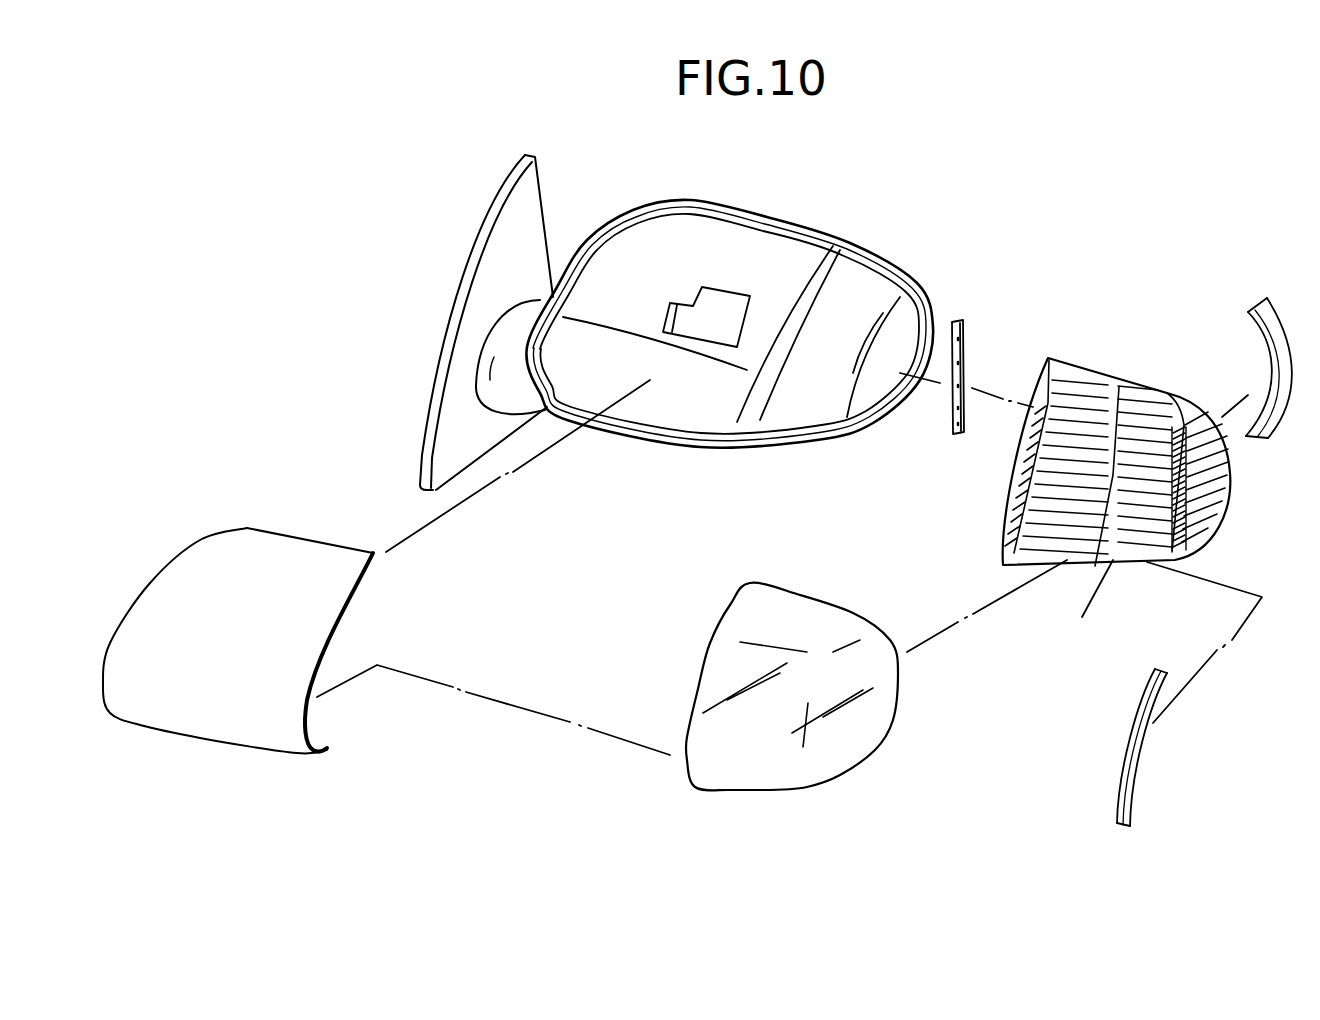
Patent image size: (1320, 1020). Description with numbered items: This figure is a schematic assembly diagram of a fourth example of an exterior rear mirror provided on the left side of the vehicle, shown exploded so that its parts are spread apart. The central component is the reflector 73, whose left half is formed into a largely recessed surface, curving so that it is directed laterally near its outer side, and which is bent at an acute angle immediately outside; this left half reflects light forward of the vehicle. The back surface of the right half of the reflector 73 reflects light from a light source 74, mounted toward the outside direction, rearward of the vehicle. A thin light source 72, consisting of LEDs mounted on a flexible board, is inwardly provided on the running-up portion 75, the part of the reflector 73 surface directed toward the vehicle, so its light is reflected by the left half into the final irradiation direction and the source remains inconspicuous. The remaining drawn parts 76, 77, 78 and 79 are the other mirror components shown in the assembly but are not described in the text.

The light source 72 is at (1128, 760).
The reflector 73 is at (1222, 490).
The light source 74 is at (968, 338).
The running-up portion 75 is at (1188, 420).
The mirror glass 76 is at (863, 750).
The lens cover 77 is at (1268, 308).
The mirror frame 78 is at (637, 208).
The mirror body cover 79 is at (290, 738).